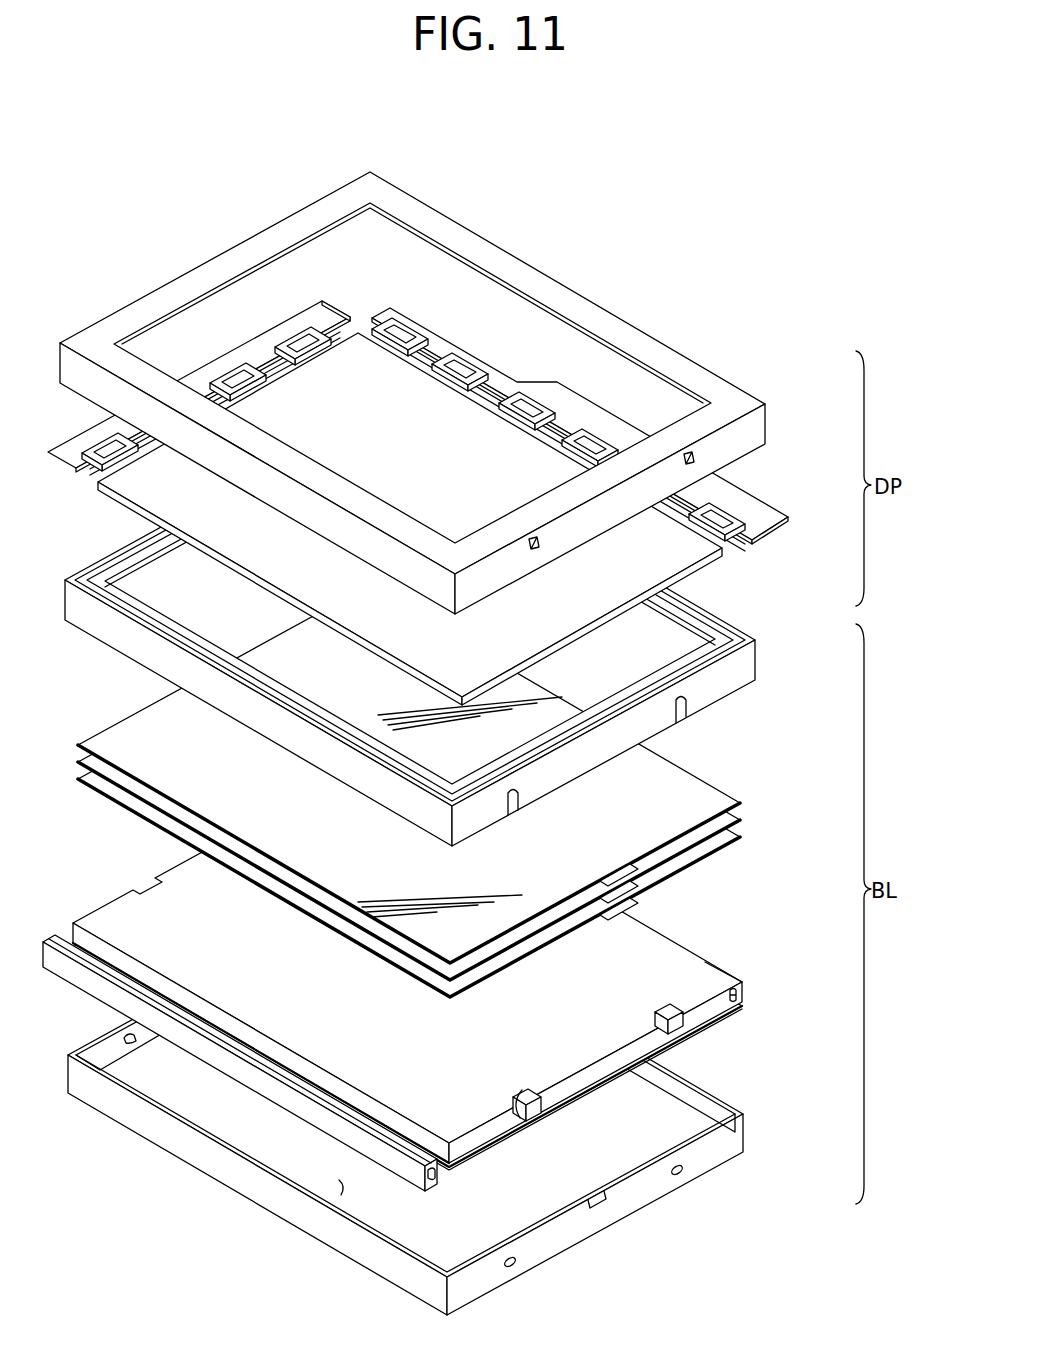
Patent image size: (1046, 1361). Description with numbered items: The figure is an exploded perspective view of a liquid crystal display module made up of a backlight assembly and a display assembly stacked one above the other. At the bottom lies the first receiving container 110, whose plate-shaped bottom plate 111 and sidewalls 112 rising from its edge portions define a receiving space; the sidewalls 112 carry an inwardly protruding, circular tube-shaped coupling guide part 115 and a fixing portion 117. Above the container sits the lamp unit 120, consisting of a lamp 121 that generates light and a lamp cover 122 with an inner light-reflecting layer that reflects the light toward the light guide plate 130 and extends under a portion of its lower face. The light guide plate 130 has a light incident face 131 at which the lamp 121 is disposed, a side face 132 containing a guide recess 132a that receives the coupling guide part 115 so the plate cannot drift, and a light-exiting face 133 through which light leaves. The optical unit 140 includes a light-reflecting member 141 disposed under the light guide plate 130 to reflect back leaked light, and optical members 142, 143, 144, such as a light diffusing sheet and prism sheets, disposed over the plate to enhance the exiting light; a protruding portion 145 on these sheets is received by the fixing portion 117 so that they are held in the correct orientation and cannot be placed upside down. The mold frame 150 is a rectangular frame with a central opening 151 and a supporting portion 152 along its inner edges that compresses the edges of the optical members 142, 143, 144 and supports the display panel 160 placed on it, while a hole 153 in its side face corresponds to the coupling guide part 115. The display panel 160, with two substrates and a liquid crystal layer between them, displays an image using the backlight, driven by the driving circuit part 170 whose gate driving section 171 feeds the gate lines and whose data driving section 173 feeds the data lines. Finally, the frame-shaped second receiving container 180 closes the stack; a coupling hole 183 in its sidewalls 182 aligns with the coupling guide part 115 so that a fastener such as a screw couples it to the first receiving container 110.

The receiving container 110 is at (430, 1103).
The bottom plate 111 is at (338, 1198).
The sidewalls 112 is at (718, 1150).
The coupling guide part 115 is at (683, 1173).
The fixing portion 117 is at (600, 1210).
The lamp unit 120 is at (437, 962).
The lamp 121 is at (745, 990).
The lamp cover 122 is at (733, 952).
The light guide plate 130 is at (409, 1065).
The light incident face 131 is at (446, 1168).
The side face 132 is at (543, 1103).
The guide recess 132a is at (684, 1028).
The light-exiting face 133 is at (523, 1094).
The optical unit 140 is at (462, 791).
The light-reflecting member 141 is at (660, 1047).
The optical member 142 is at (742, 838).
The optical member 143 is at (742, 821).
The optical member 144 is at (742, 804).
The protruding portion 145 is at (634, 900).
The mold frame 150 is at (433, 629).
The opening 151 is at (723, 684).
The supporting portion 152 is at (684, 632).
The hole 153 is at (692, 716).
The display panel 160 is at (706, 556).
The driving circuit part 170 is at (418, 345).
The gate driving section 171 is at (336, 310).
The data driving section 173 is at (404, 326).
The second receiving container 180 is at (447, 393).
The sidewalls 182 is at (759, 427).
The coupling hole 183 is at (696, 460).